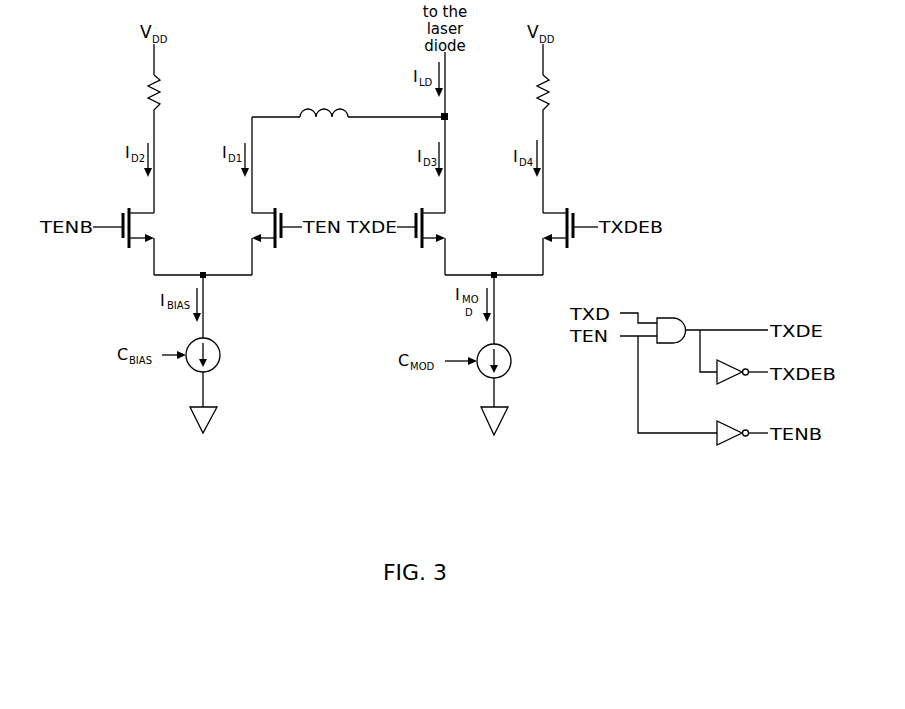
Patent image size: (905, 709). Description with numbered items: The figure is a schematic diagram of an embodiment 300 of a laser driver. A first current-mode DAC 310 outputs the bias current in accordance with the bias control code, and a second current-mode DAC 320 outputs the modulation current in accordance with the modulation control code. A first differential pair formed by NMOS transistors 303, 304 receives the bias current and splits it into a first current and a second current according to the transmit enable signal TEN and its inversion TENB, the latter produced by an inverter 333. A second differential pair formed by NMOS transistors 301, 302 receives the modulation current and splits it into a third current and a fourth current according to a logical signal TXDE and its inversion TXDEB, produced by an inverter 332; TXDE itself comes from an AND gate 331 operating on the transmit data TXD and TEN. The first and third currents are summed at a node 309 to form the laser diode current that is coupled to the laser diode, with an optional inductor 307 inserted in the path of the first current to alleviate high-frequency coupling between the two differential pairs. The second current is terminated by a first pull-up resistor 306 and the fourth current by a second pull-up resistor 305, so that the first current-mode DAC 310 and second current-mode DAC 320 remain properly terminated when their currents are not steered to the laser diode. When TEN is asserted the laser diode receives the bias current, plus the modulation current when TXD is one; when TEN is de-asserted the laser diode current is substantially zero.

The embodiment 300 is at (108, 467).
The NMOS transistor 301 is at (434, 211).
The NMOS transistor 302 is at (557, 211).
The NMOS transistor 303 is at (268, 211).
The NMOS transistor 304 is at (136, 211).
The second pull-up resistor 305 is at (547, 76).
The first pull-up resistor 306 is at (151, 76).
The inductor 307 is at (313, 104).
The node 309 is at (450, 116).
The first current-mode DAC 310 is at (237, 343).
The second current-mode DAC 320 is at (527, 350).
The AND gate 331 is at (668, 317).
The inverter 332 is at (729, 361).
The inverter 333 is at (729, 421).